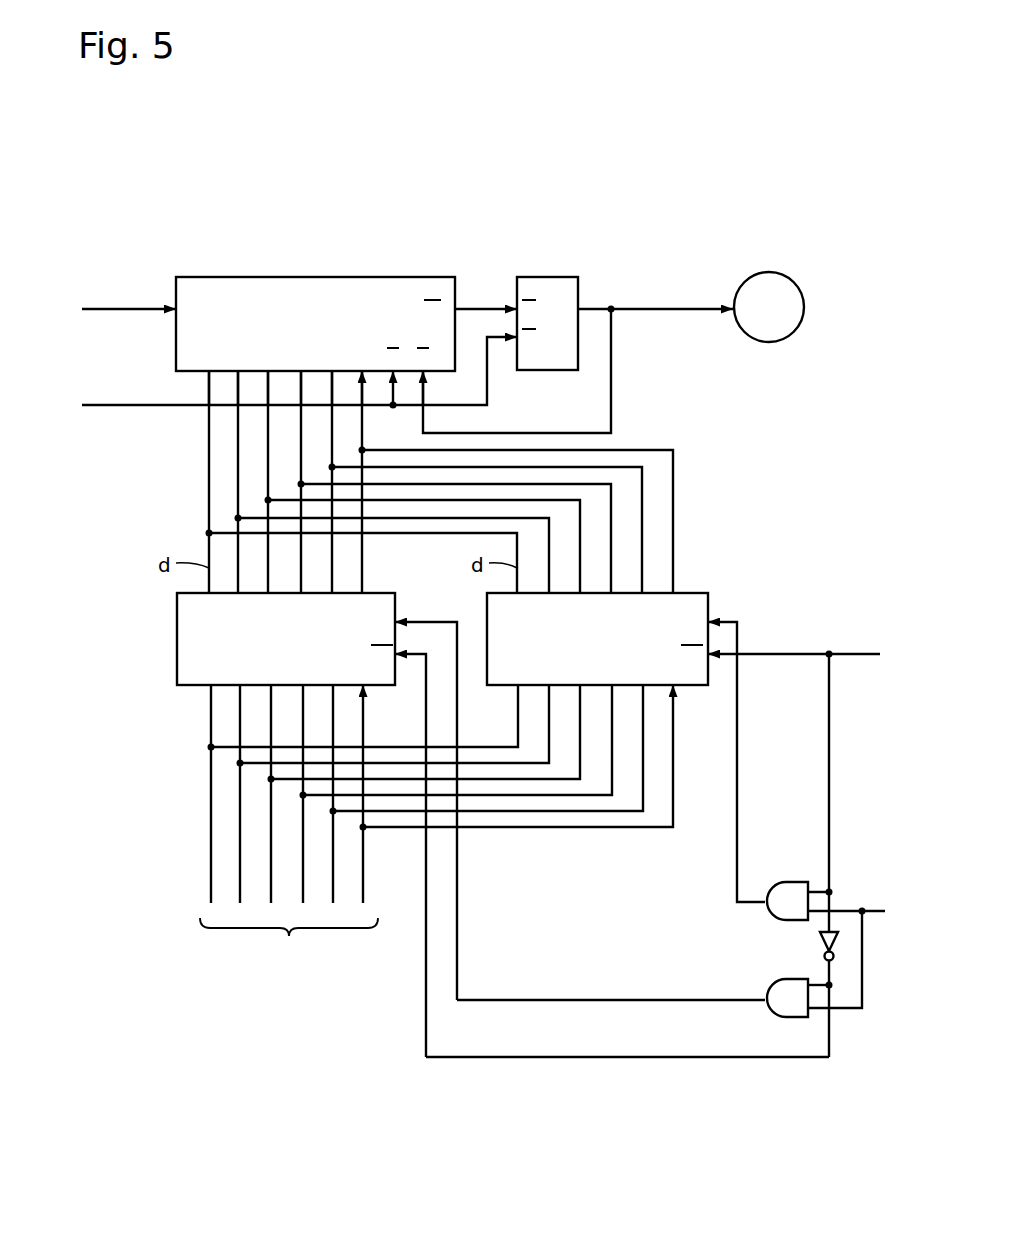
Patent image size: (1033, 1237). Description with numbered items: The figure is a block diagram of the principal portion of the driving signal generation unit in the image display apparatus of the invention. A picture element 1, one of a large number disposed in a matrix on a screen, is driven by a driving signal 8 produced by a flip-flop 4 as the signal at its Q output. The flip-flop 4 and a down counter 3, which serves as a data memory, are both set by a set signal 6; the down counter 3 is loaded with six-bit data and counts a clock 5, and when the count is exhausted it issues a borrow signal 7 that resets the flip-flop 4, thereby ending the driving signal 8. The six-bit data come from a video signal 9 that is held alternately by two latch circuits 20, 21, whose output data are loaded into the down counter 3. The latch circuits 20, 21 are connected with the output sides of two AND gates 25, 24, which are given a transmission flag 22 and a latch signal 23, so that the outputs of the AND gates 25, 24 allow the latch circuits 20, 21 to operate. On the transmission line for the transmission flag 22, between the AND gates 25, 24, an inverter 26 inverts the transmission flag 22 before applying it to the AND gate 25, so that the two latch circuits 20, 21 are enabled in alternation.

The picture element 1 is at (767, 272).
The down counter 3 is at (200, 277).
The flip-flop 4 is at (540, 277).
The clock 5 is at (123, 309).
The set signal 6 is at (123, 405).
The borrow signal 7 is at (478, 309).
The driving signal 8 is at (611, 309).
The video signal 9 is at (289, 840).
The latch circuit 20 is at (177, 650).
The latch circuit 21 is at (707, 593).
The transmission flag 22 is at (852, 654).
The latch signal 23 is at (870, 911).
The AND gate 24 is at (787, 882).
The AND gate 25 is at (778, 1017).
The inverter 26 is at (820, 945).